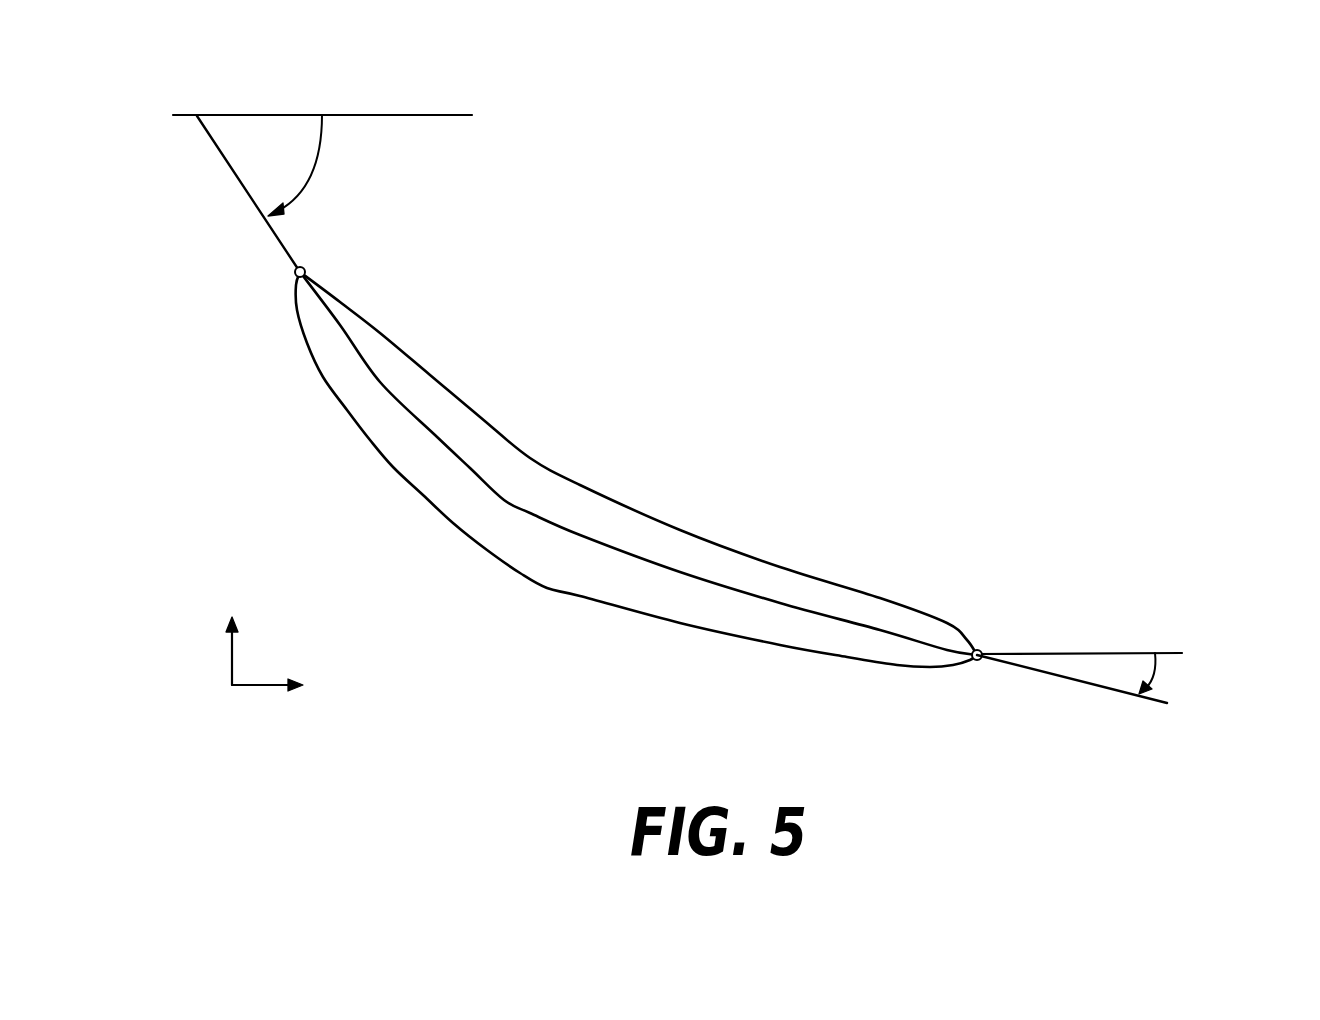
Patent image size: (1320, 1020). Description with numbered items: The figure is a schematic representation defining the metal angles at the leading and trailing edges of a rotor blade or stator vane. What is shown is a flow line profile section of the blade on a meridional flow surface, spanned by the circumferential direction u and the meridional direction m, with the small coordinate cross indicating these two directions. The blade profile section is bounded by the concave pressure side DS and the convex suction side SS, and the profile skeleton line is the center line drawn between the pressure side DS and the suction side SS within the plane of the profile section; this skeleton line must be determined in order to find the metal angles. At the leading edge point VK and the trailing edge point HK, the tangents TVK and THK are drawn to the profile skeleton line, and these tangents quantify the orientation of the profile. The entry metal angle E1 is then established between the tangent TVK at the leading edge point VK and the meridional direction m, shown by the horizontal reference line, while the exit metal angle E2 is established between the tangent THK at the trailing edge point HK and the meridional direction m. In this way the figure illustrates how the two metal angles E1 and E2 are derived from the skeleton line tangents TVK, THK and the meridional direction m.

The leading edge point VK is at (331, 250).
The trailing edge point HK is at (1004, 634).
The pressure side DS is at (617, 503).
The suction side SS is at (547, 587).
The tangent T_VK TVK is at (241, 194).
The tangent T_HK THK is at (1072, 700).
The entry metal angle E1 is at (320, 165).
The exit metal angle E2 is at (1196, 680).
The circumferential direction u is at (232, 632).
The meridional direction m is at (285, 681).